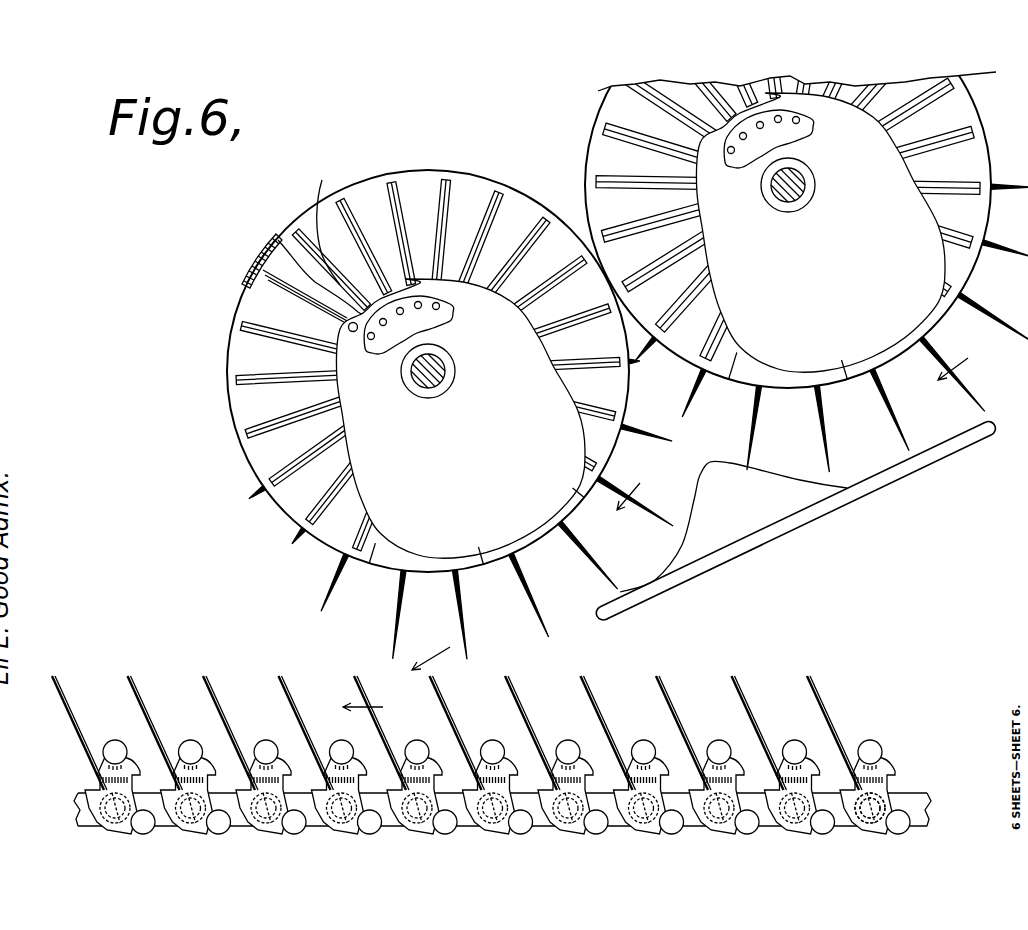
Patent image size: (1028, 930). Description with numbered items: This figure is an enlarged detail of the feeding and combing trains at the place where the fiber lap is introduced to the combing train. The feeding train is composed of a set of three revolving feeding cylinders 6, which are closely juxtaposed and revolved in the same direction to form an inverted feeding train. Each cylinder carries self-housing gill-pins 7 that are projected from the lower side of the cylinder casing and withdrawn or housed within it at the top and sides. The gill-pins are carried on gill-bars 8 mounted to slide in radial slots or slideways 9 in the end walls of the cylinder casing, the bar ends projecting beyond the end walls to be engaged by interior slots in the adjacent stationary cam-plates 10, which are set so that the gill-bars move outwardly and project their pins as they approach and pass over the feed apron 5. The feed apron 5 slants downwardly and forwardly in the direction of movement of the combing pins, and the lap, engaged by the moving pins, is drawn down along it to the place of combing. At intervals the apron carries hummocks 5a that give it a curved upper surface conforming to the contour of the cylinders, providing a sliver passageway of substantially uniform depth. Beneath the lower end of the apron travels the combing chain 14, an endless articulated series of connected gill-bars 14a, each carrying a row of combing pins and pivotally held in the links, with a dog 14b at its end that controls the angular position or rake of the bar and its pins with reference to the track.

The feed apron 5 is at (843, 503).
The hummocks 5a is at (703, 468).
The revolving feeding cylinders 6 is at (585, 168).
The self-housing gill-pins 7 is at (453, 197).
The gill-bars 8 is at (353, 332).
The radial slots or slideways 9 is at (343, 222).
The cam-plates 10 is at (420, 535).
The combing chain 14 is at (501, 755).
The gill-bars of combing chain 14a is at (878, 800).
The dog 14b is at (892, 770).